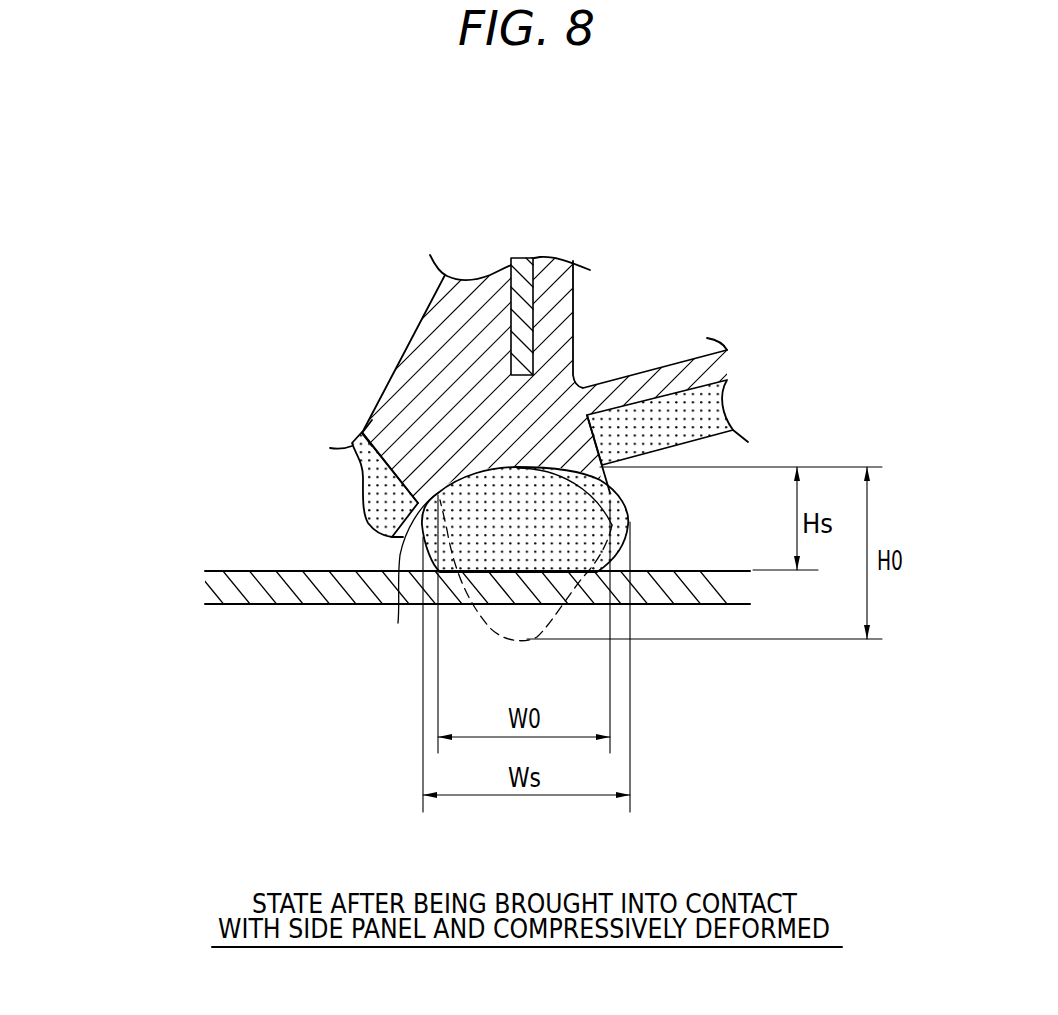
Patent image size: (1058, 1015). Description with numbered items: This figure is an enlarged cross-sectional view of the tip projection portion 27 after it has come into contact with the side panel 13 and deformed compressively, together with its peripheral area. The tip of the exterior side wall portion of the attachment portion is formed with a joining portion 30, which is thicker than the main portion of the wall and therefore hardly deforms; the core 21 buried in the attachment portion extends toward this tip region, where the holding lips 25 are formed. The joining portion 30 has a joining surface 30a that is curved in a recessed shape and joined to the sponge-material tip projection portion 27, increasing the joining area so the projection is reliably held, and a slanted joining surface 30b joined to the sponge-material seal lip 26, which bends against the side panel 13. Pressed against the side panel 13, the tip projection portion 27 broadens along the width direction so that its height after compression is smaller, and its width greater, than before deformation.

The side panel 13 is at (262, 572).
The core 21 is at (537, 317).
The holding lip 25 is at (645, 372).
The seal lip 26 is at (357, 440).
The tip projection portion 27 is at (398, 623).
The joining portion 30 is at (405, 348).
The joining surface 30a is at (610, 510).
The joining surface 30b is at (362, 430).